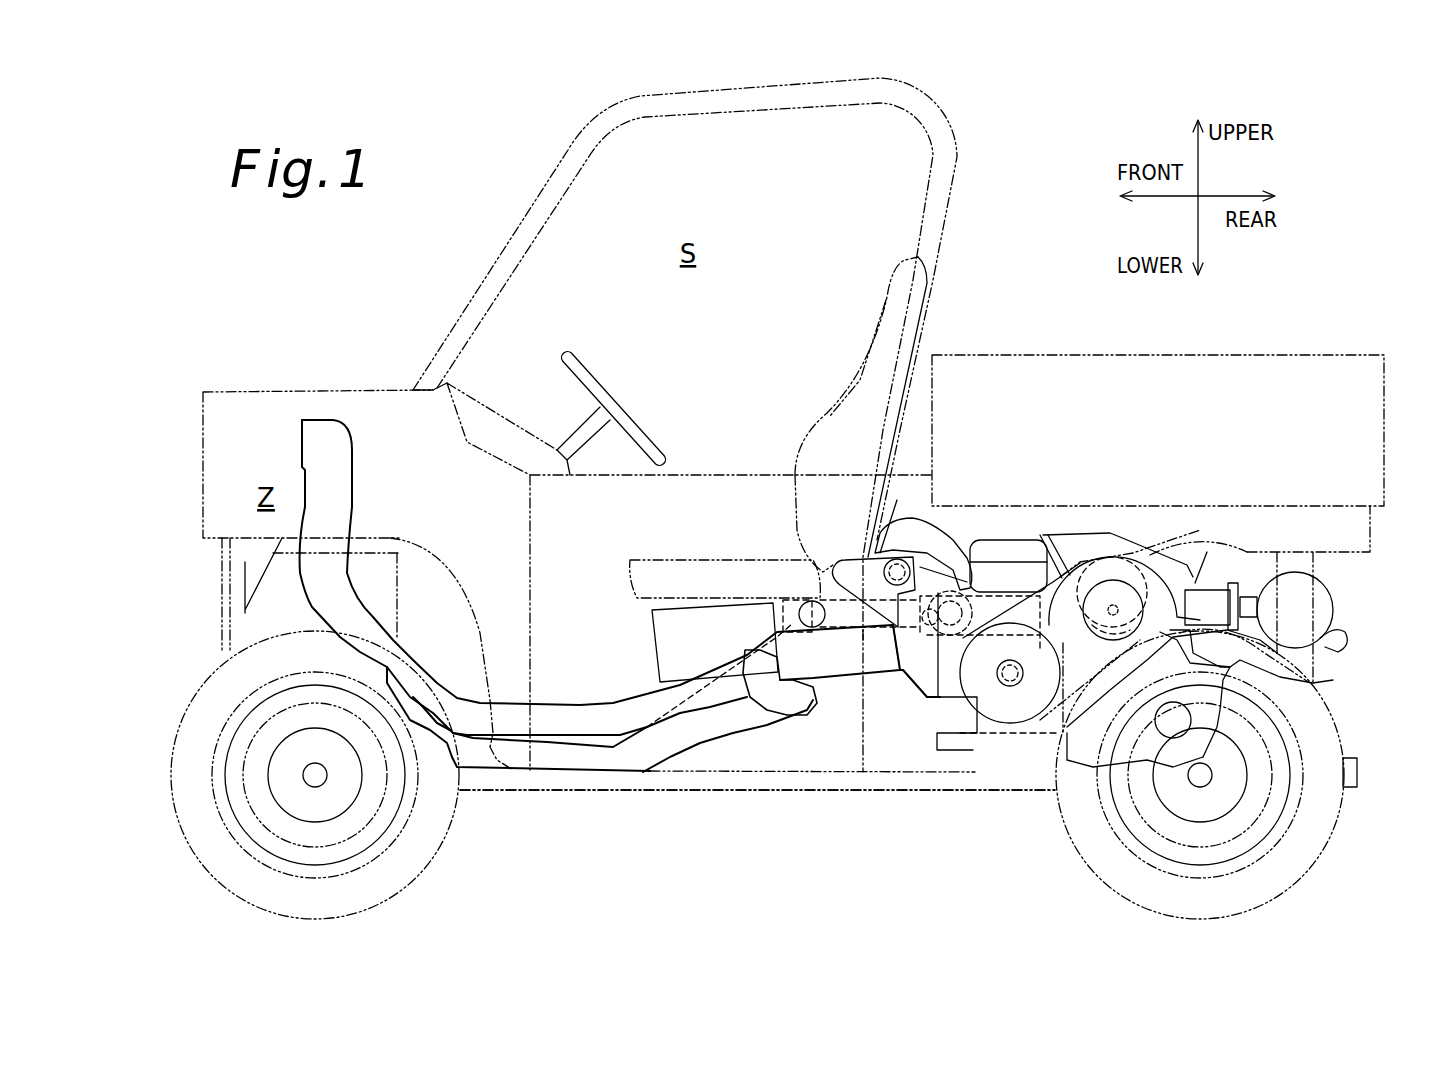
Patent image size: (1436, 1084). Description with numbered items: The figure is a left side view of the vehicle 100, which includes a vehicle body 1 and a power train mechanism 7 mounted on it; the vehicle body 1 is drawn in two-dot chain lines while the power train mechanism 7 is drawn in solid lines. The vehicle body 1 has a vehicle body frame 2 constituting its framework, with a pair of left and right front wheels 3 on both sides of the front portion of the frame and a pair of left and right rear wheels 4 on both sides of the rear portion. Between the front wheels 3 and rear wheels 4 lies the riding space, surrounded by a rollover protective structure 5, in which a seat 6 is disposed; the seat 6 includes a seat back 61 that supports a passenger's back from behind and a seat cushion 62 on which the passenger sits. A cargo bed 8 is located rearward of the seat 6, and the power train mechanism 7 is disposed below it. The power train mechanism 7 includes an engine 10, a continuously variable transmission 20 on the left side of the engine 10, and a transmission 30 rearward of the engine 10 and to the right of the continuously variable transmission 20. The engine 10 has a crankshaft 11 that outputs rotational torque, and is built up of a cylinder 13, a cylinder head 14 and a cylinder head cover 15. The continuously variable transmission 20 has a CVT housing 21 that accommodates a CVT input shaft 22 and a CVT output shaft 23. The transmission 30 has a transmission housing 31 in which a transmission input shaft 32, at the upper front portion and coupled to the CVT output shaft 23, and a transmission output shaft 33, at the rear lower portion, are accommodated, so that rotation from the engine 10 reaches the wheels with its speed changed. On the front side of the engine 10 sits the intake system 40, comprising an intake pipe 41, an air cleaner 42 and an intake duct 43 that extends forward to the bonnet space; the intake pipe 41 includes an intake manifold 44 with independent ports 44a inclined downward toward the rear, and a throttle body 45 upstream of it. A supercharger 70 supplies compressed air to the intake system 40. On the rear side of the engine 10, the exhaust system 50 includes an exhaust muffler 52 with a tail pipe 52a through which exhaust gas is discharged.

The vehicle 100 is at (530, 170).
The vehicle body 1 is at (388, 340).
The vehicle body frame 2 is at (800, 790).
The front wheels 3 is at (420, 867).
The rear wheels 4 is at (1070, 823).
The rollover protective structure (ROPS) 5 is at (932, 104).
The seat 6 is at (830, 415).
The seat back 61 is at (862, 377).
The seat cushion 62 is at (760, 550).
The power train mechanism 7 is at (910, 745).
The cargo bed 8 is at (1243, 365).
The engine 10 is at (1020, 527).
The crankshaft 11 is at (995, 690).
The cylinder 13 is at (970, 580).
The cylinder head 14 is at (1000, 572).
The cylinder head cover 15 is at (1030, 553).
The continuously variable transmission (CVT) 20 is at (1133, 537).
The CVT housing 21 is at (1017, 743).
The CVT input shaft 22 is at (1010, 673).
The CVT output shaft 23 is at (1117, 603).
The transmission 30 is at (1083, 743).
The transmission housing 31 is at (1313, 683).
The transmission input shaft 32 is at (1111, 629).
The transmission output shaft 33 is at (1257, 753).
The intake system 40 is at (620, 797).
The intake pipe 41 is at (858, 528).
The air cleaner 42 is at (738, 641).
The intake duct 43 is at (717, 728).
The intake manifold 44 is at (900, 515).
The independent ports 44a is at (967, 553).
The throttle body 45 is at (893, 557).
The exhaust system 50 is at (1237, 537).
The exhaust muffler 52 is at (1295, 610).
The tail pipe 52a is at (1345, 622).
The supercharger 70 is at (910, 655).